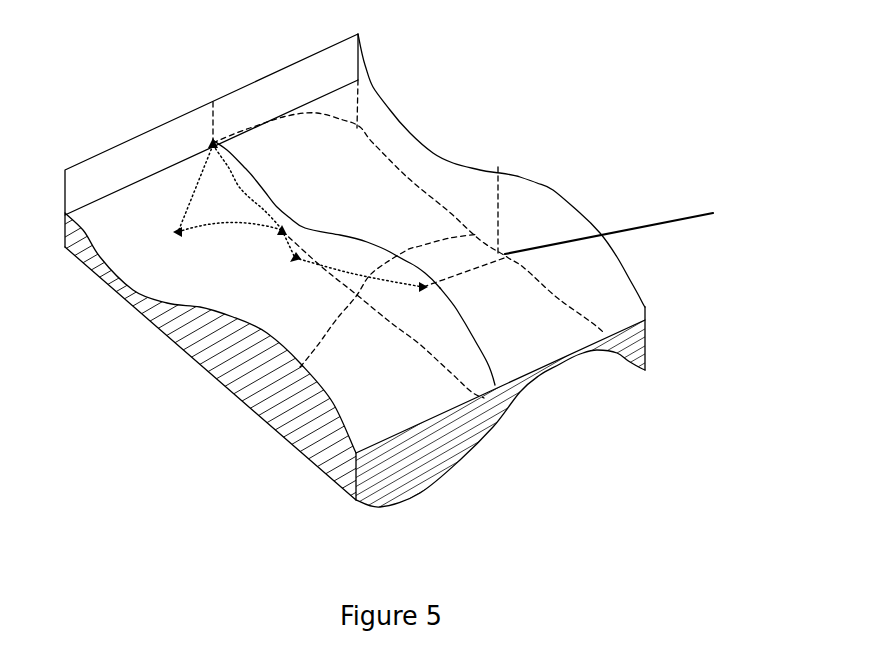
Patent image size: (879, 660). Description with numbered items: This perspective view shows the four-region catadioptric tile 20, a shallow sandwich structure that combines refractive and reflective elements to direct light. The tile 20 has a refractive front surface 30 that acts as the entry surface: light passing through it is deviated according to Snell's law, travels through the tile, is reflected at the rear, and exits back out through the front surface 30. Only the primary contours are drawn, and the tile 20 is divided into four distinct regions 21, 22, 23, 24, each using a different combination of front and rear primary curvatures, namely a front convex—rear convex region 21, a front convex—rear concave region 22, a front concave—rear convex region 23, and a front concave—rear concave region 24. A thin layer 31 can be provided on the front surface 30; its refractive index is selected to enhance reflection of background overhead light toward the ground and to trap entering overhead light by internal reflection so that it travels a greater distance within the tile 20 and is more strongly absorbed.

The four-region catadioptric tile 20 is at (416, 341).
The front convex—rear convex region 21 is at (397, 408).
The front convex—rear concave region 22 is at (525, 309).
The front concave—rear convex region 23 is at (224, 271).
The front concave—rear concave region 24 is at (362, 191).
The front surface 30 is at (645, 305).
The thin layer 31 is at (390, 112).